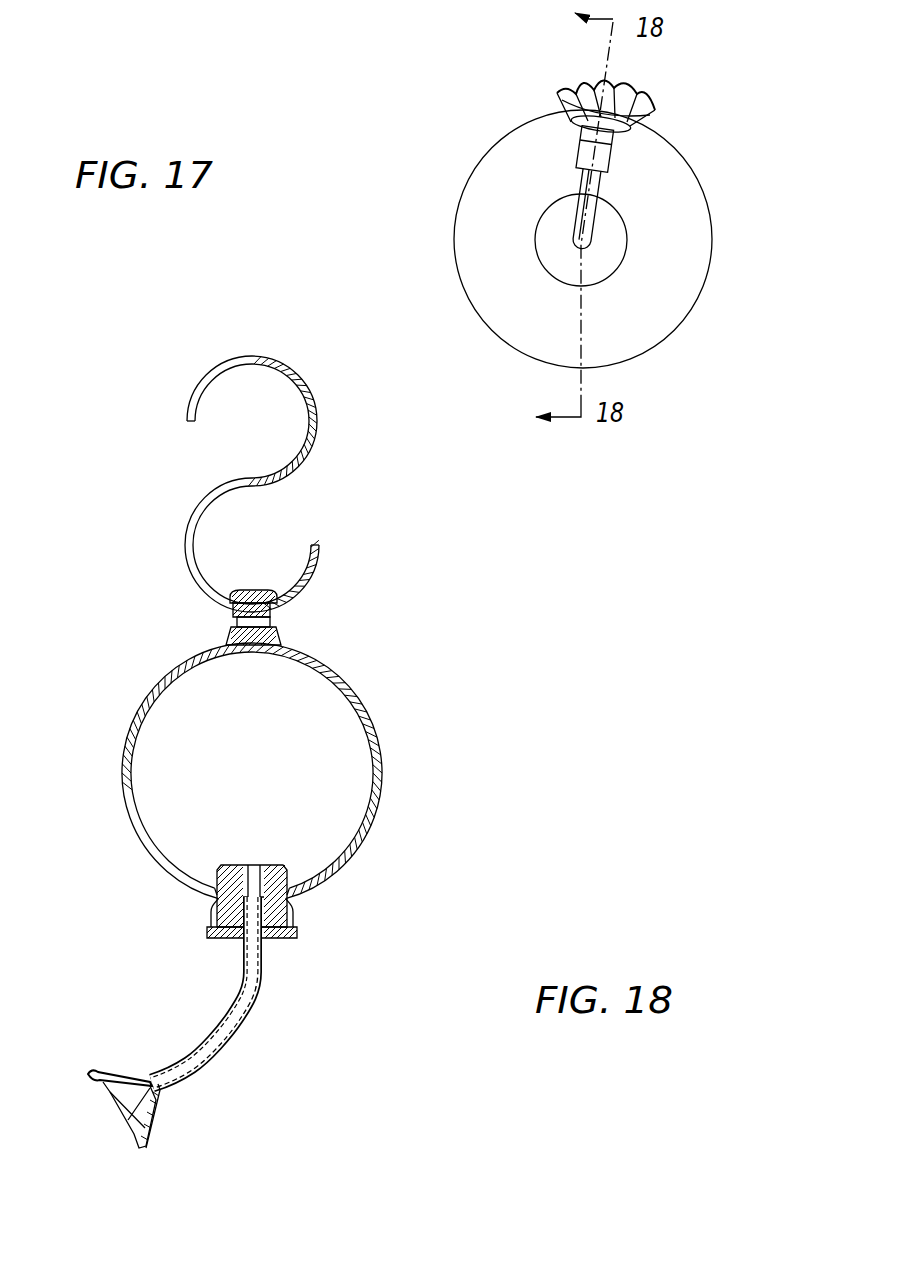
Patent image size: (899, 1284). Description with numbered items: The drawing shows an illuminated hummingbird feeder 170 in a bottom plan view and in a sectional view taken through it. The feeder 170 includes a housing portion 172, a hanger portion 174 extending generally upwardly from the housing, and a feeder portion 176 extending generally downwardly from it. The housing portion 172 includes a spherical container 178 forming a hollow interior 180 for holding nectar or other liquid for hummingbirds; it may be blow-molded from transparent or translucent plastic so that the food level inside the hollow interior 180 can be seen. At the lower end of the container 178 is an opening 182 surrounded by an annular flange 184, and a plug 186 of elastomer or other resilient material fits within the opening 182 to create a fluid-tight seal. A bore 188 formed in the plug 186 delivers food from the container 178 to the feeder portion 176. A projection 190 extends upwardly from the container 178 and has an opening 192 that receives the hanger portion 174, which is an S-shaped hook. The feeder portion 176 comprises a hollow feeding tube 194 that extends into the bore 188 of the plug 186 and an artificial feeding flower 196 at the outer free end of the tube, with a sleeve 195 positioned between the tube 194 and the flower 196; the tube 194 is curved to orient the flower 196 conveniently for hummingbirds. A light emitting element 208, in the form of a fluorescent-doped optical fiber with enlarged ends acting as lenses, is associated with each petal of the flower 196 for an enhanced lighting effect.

In FIG. 17, the illuminated hummingbird feeder 170 is at (417, 150).
In FIG. 18, the illuminated hummingbird feeder 170 is at (524, 620).
In FIG. 17, the housing portion 172 is at (714, 255).
In FIG. 18, the housing portion 172 is at (389, 736).
In FIG. 18, the hanger portion 174 is at (318, 423).
In FIG. 17, the feeder portion 176 is at (622, 160).
In FIG. 18, the feeder portion 176 is at (257, 1008).
In FIG. 17, the spherical container 178 is at (611, 239).
In FIG. 18, the spherical container 178 is at (382, 780).
In FIG. 18, the hollow interior 180 is at (295, 705).
In FIG. 18, the opening 182 is at (293, 905).
In FIG. 18, the annular flange 184 is at (216, 907).
In FIG. 17, the plug 186 is at (553, 257).
In FIG. 18, the plug 186 is at (268, 940).
In FIG. 18, the bore 188 is at (252, 868).
In FIG. 18, the projection 190 is at (250, 588).
In FIG. 18, the opening 192 is at (231, 610).
In FIG. 17, the hollow feeding tube 194 is at (580, 194).
In FIG. 18, the hollow feeding tube 194 is at (221, 1043).
In FIG. 18, the sleeve 195 is at (178, 1085).
In FIG. 17, the artificial feeding flower 196 is at (552, 100).
In FIG. 18, the artificial feeding flower 196 is at (107, 1066).
In FIG. 17, the light emitting element 208 is at (640, 100).
In FIG. 18, the light emitting element 208 is at (130, 1123).